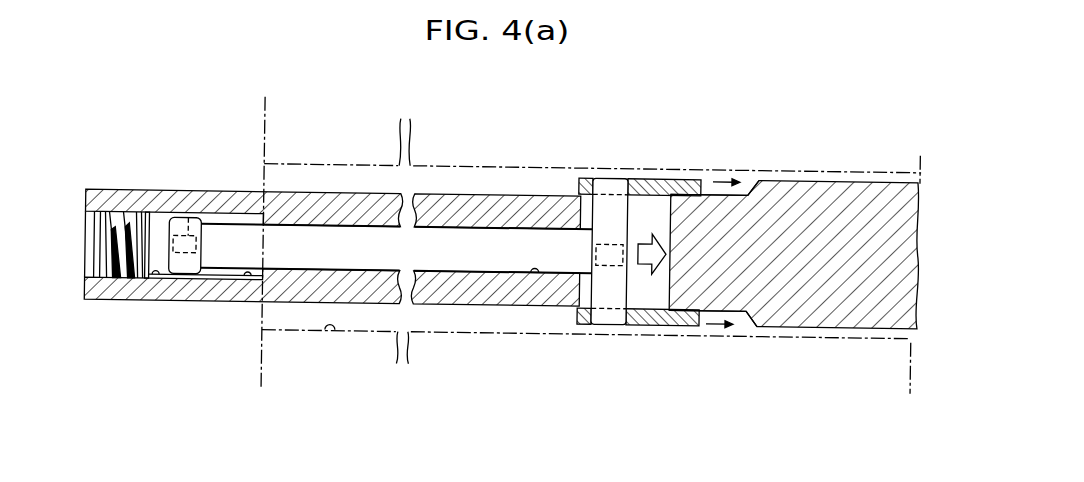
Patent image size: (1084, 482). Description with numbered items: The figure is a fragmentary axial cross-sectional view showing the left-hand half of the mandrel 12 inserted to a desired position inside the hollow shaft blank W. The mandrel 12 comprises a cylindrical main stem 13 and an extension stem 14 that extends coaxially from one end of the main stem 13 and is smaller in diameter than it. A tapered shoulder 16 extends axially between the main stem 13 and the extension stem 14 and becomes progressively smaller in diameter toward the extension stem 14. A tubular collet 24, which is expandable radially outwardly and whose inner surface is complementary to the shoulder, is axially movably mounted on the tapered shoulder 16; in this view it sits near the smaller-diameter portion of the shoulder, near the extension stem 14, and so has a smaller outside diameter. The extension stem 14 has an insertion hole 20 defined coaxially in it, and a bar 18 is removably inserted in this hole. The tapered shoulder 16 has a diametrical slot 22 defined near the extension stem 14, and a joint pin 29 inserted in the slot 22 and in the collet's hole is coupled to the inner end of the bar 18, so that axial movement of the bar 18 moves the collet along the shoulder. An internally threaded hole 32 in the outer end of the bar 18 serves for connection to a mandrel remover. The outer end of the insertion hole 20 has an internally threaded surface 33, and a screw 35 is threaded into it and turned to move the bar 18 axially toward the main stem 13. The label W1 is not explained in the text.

The mandrel 12 is at (812, 102).
The main stem 13 is at (812, 213).
The extension stem 14 is at (322, 200).
The tapered shoulder 16 is at (746, 190).
The bar 18 is at (367, 250).
The insertion hole 20 is at (249, 281).
The diametrical slot 22 is at (668, 291).
The tubular collet 24 is at (655, 191).
The joint pin 29 is at (609, 291).
The internally threaded hole 32 is at (187, 222).
The internally threaded surface 33 is at (158, 305).
The screw 35 is at (119, 305).
The hollow shaft blank W is at (870, 141).
The reference line W1 is at (337, 336).